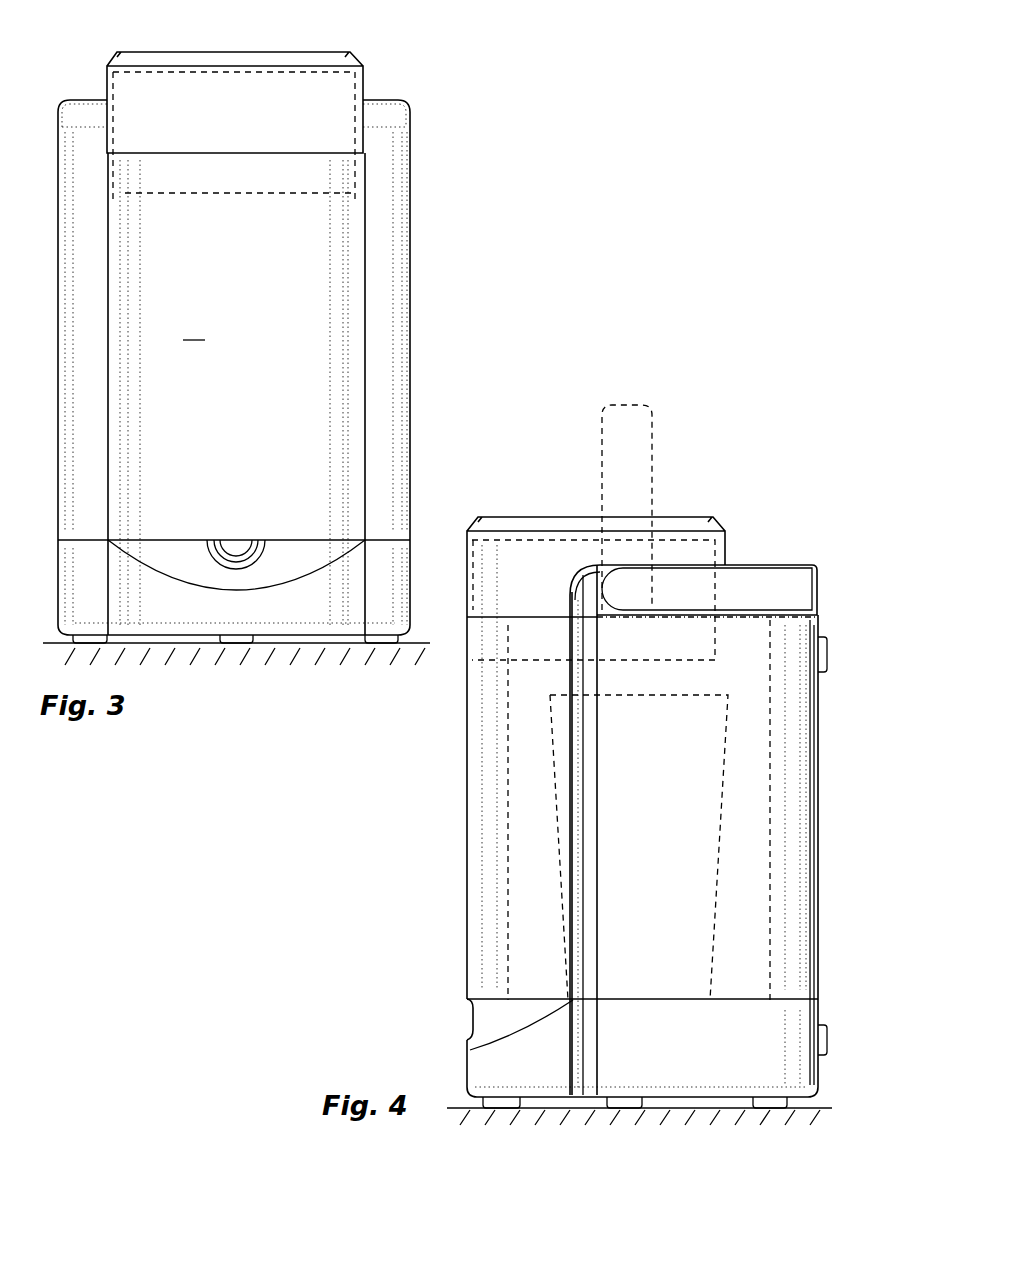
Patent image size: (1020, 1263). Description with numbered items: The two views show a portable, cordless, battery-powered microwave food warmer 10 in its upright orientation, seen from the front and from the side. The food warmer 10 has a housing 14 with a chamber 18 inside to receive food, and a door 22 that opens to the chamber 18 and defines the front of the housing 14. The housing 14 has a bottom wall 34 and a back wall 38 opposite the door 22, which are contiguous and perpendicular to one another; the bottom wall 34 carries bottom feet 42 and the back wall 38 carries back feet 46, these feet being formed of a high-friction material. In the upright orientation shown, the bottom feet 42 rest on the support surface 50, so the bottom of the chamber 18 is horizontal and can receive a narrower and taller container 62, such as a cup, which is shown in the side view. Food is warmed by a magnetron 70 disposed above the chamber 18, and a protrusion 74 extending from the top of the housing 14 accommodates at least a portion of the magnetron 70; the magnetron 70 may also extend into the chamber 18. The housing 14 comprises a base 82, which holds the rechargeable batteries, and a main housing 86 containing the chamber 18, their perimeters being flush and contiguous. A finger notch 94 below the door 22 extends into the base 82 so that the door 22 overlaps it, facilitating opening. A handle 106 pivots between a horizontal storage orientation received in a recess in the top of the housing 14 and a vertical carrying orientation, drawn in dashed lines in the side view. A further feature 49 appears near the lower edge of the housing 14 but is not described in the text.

In FIG. 3, the microwave food warmer 10 is at (267, 366).
In FIG. 4, the microwave food warmer 10 is at (581, 736).
In FIG. 3, the housing 14 is at (264, 367).
In FIG. 4, the housing 14 is at (663, 856).
In FIG. 4, the chamber 18 is at (790, 567).
In FIG. 3, the door 22 is at (236, 394).
In FIG. 4, the door 22 is at (480, 765).
In FIG. 4, the bottom wall 34 is at (685, 1095).
In FIG. 4, the back wall 38 is at (818, 738).
In FIG. 3, the bottom feet 42 is at (380, 648).
In FIG. 4, the bottom feet 42 is at (770, 1103).
In FIG. 4, the back feet 46 is at (827, 657).
In FIG. 4, the notch 49 is at (472, 1017).
In FIG. 3, the support surface 50 is at (53, 643).
In FIG. 4, the support surface 50 is at (455, 1103).
In FIG. 4, the narrower and taller container 62 is at (543, 725).
In FIG. 3, the magnetron 70 is at (233, 47).
In FIG. 4, the magnetron 70 is at (558, 540).
In FIG. 3, the protrusion 74 is at (277, 66).
In FIG. 4, the protrusion 74 is at (522, 515).
In FIG. 3, the base 82 is at (158, 610).
In FIG. 4, the base 82 is at (547, 1057).
In FIG. 3, the main housing 86 is at (390, 227).
In FIG. 4, the main housing 86 is at (788, 943).
In FIG. 3, the finger notch 94 is at (245, 548).
In FIG. 4, the handle 106 is at (628, 404).